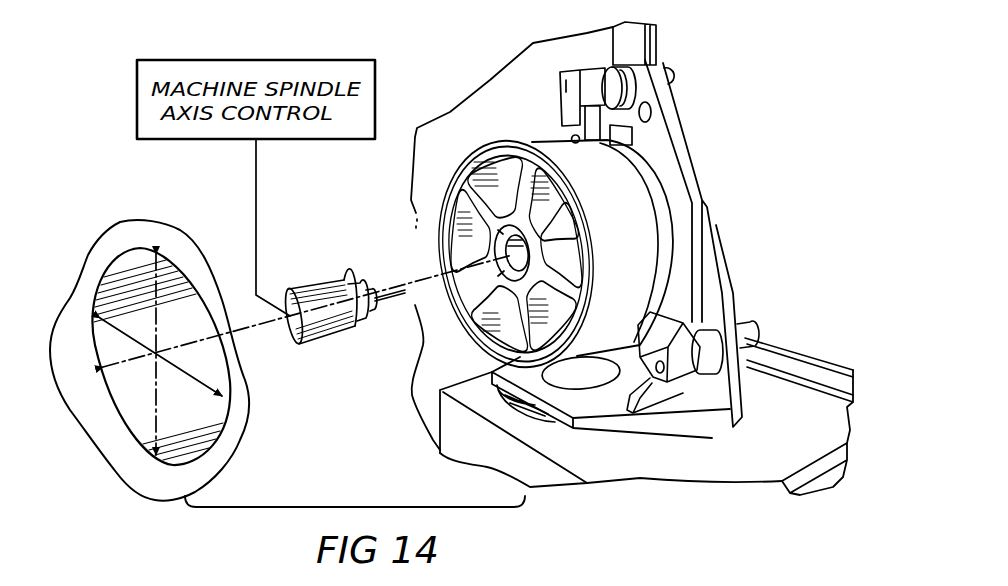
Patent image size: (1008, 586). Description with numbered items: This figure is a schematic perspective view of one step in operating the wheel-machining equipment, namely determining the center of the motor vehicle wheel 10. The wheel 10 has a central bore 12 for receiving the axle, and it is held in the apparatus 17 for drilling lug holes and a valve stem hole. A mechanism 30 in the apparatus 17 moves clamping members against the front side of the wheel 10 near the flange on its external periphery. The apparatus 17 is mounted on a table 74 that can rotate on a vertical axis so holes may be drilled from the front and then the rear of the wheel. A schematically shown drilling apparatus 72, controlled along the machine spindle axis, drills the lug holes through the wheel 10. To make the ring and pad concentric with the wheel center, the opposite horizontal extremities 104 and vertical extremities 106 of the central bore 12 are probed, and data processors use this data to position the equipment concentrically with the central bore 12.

The motor vehicle wheel 10 is at (524, 146).
The central bore 12 is at (120, 402).
The apparatus 17 is at (704, 143).
The mechanism 30 is at (596, 52).
The drilling apparatus 72 is at (325, 292).
The table 74 is at (527, 433).
The horizontal extremities of the central bore 104 is at (88, 307).
The vertical extremities of the central bore 106 is at (156, 224).